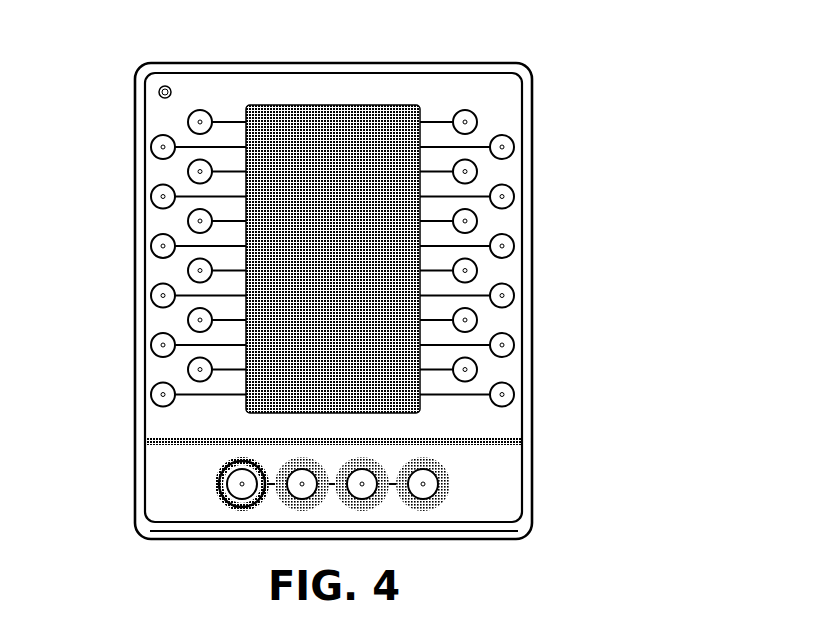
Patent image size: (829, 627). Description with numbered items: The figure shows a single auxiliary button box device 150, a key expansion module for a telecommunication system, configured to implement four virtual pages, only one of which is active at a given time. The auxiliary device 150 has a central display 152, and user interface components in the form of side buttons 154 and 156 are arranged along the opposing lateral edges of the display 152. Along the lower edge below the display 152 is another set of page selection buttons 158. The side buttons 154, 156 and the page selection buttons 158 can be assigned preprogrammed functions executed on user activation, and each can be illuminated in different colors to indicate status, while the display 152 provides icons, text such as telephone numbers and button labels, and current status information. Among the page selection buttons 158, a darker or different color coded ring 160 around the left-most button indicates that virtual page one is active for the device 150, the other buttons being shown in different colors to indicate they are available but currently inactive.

The auxiliary button box device 150 is at (624, 38).
The display 152 is at (332, 104).
The side buttons 154 is at (495, 117).
The side buttons 156 is at (153, 118).
The page selection buttons 158 is at (464, 467).
The color coded ring 160 is at (216, 483).